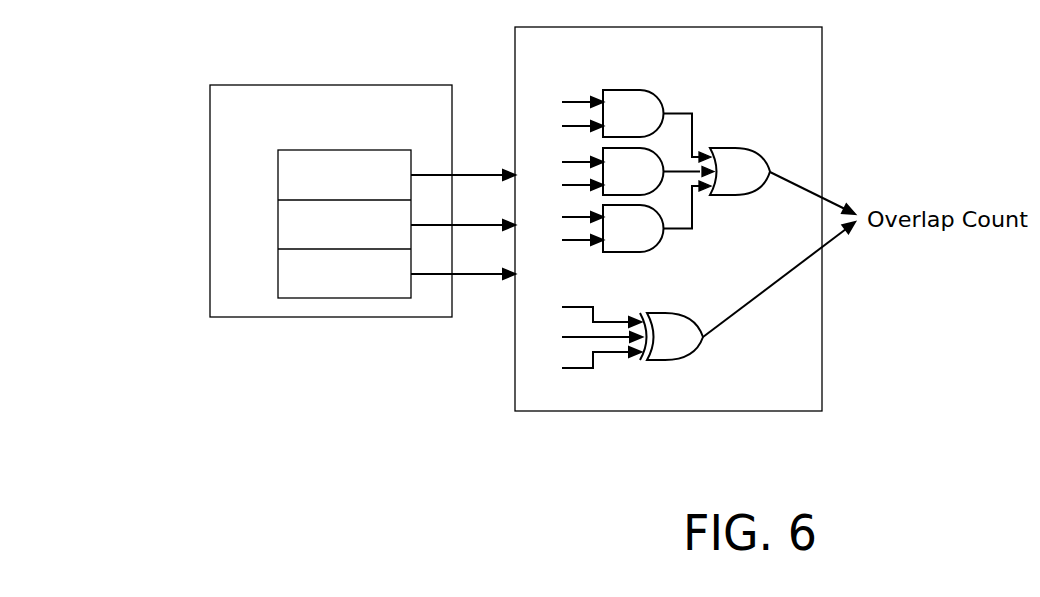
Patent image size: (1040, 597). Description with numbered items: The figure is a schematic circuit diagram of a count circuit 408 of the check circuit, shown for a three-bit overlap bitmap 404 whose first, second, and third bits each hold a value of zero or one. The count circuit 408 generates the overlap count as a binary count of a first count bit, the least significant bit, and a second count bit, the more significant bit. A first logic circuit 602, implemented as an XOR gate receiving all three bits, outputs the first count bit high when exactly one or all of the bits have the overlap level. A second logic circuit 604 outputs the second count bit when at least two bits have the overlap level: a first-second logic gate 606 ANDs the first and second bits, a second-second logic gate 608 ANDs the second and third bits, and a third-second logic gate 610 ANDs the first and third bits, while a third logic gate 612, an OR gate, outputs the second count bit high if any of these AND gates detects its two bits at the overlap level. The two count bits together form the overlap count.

The overlap bitmap 404 is at (223, 97).
The count circuit 408 is at (810, 43).
The first logic circuit 602 is at (694, 366).
The second logic circuit 604 is at (750, 88).
The first-second logic gate 606 is at (640, 101).
The second-second logic gate 608 is at (647, 152).
The third-second logic gate 610 is at (643, 237).
The third logic gate 612 is at (733, 196).